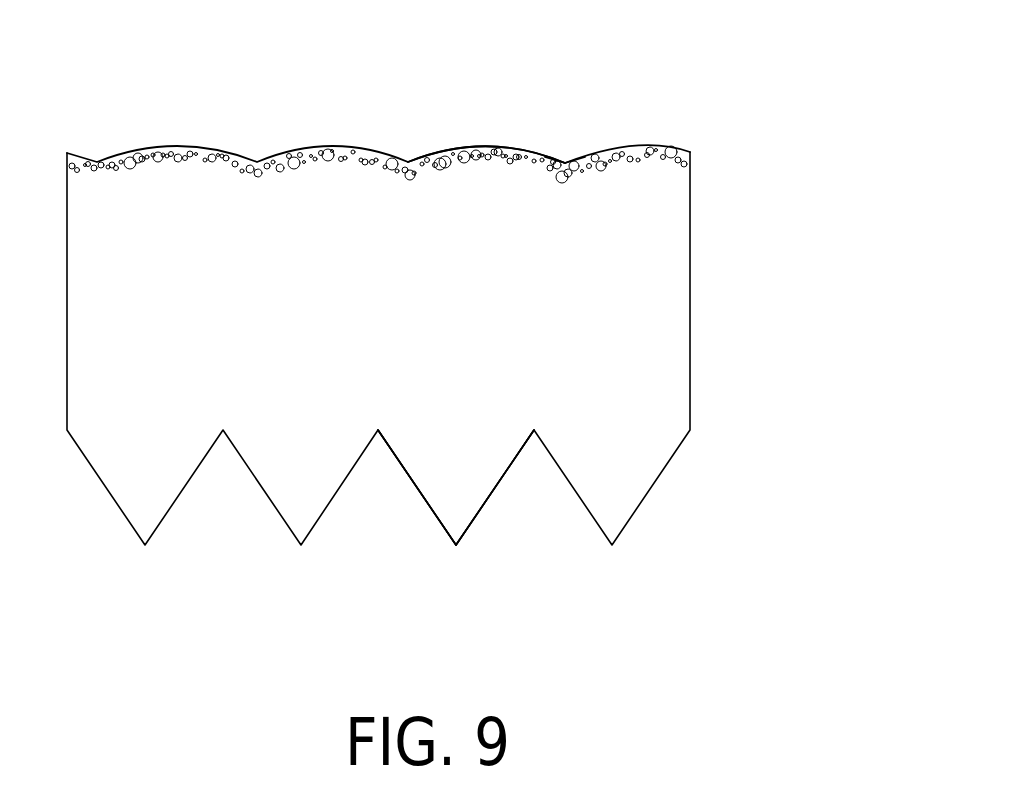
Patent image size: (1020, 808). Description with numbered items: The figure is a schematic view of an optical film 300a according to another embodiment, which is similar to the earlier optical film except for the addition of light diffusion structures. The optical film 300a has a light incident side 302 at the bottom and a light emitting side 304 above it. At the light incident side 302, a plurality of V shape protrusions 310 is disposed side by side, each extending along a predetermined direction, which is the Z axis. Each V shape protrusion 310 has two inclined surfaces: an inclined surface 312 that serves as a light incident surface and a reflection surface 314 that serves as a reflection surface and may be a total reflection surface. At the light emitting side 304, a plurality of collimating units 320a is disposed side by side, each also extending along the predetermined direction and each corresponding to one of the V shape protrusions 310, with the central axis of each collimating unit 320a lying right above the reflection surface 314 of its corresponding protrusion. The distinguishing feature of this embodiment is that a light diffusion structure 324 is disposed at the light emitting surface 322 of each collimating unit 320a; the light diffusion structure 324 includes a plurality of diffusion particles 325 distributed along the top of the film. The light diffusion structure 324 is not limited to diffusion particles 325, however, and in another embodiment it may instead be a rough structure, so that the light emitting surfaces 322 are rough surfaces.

The optical film 300a is at (413, 321).
The light incident side 302 is at (441, 393).
The light emitting side 304 is at (402, 129).
The V shape protrusion 310 is at (496, 532).
The inclined surface 312 is at (441, 523).
The reflection surface 314 is at (482, 508).
The collimating unit 320a is at (546, 157).
The light emitting surface 322 is at (488, 148).
The light diffusion structure 324 is at (122, 174).
The diffusion particle 325 is at (180, 148).